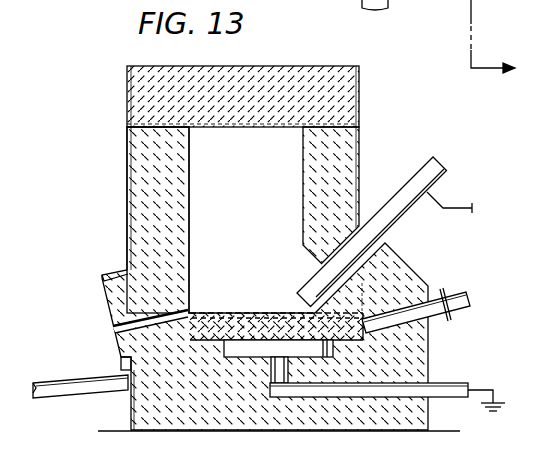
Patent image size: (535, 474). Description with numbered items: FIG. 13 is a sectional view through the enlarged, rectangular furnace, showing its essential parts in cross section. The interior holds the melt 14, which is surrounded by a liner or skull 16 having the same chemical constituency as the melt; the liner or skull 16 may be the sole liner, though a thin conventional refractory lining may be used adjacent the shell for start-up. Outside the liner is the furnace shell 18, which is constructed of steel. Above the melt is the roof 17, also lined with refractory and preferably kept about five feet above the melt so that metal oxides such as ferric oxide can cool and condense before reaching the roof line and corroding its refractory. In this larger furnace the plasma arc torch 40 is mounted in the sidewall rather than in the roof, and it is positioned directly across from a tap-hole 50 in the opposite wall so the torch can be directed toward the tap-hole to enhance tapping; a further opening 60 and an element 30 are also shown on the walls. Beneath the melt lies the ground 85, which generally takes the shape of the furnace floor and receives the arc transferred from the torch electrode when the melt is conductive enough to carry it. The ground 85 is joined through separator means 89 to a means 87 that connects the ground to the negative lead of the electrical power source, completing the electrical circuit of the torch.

The melt 14 is at (270, 322).
The liner or skull 16 is at (188, 200).
The roof 17 is at (280, 112).
The furnace shell 18 is at (362, 136).
The inlet tube 30 is at (470, 300).
The plasma arc torch 40 is at (431, 165).
The tap-hole 50 is at (114, 318).
The outlet tube 60 is at (62, 389).
The ground 85 is at (248, 322).
The means for connecting the ground to the negative lead 87 is at (438, 388).
The separator means 89 is at (268, 378).